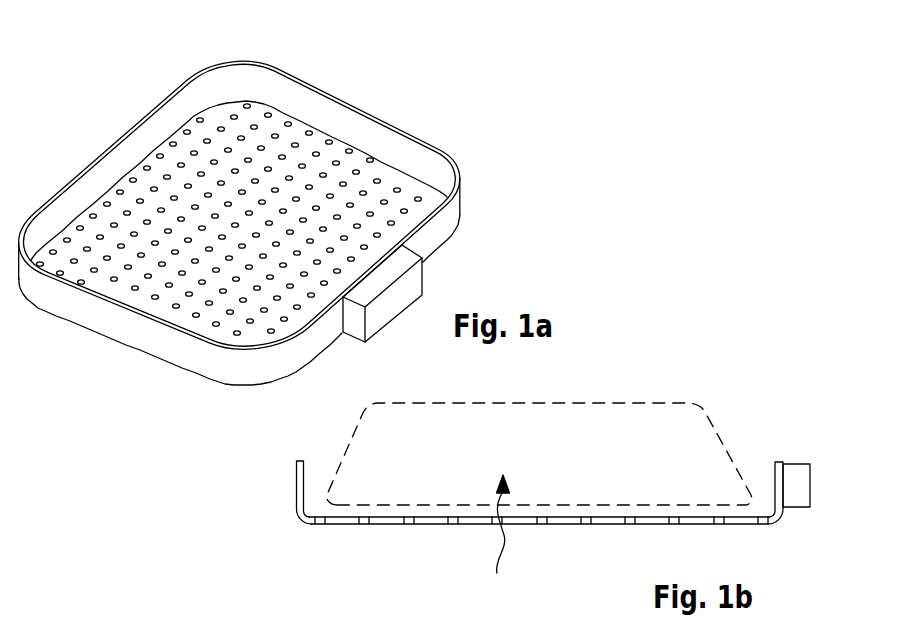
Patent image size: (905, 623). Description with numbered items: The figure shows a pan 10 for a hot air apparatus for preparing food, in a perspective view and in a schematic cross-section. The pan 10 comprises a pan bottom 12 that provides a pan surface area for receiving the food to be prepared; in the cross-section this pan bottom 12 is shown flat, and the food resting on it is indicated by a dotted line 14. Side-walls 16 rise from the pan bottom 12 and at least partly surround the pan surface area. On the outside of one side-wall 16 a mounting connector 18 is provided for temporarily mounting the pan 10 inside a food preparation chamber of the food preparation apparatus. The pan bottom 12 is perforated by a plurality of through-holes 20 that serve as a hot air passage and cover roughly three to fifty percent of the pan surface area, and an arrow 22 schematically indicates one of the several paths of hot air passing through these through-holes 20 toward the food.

In FIG. 1A, the pan 10 is at (158, 78).
In FIG. 1A, the pan bottom 12 is at (343, 181).
In FIG. 1B, the pan bottom 12 is at (307, 526).
In FIG. 1B, the dotted line 14 is at (713, 427).
In FIG. 1A, the side-walls 16 is at (177, 348).
In FIG. 1B, the side-walls 16 is at (297, 471).
In FIG. 1A, the mounting connector 18 is at (382, 293).
In FIG. 1B, the mounting connector 18 is at (793, 465).
In FIG. 1A, the through-holes 20 is at (227, 148).
In FIG. 1B, the through-holes 20 is at (363, 526).
In FIG. 1B, the arrow 22 is at (506, 494).